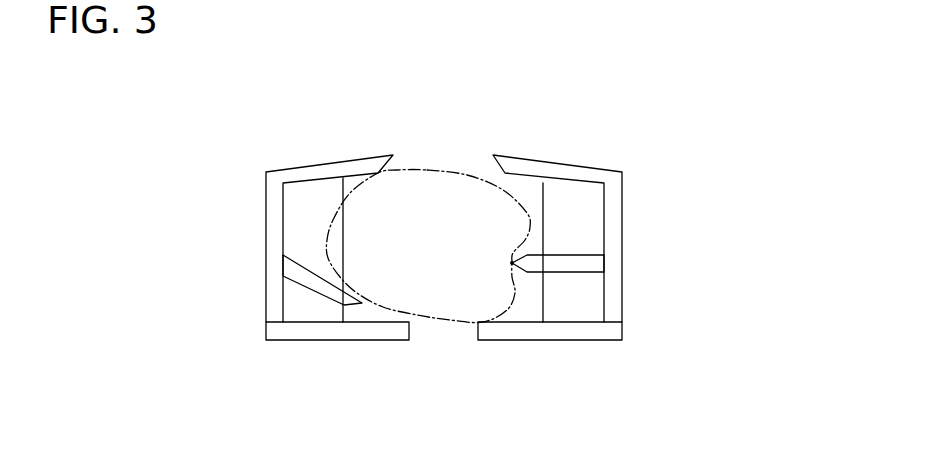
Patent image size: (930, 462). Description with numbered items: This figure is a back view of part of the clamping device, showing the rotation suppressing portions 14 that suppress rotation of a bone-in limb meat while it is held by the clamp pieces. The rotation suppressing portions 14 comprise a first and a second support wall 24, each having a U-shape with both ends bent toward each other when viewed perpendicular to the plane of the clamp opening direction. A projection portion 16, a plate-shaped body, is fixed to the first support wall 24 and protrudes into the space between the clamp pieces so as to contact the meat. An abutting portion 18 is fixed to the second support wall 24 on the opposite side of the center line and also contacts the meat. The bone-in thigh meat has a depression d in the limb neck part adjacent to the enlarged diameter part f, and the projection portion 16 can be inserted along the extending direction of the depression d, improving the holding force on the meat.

The rotation suppressing portion 14 is at (266, 217).
The support wall 24 is at (265, 307).
The abutting portion 18 is at (313, 283).
The projection portion 16 is at (575, 263).
The depression d is at (512, 263).
The enlarged diameter part f is at (427, 170).